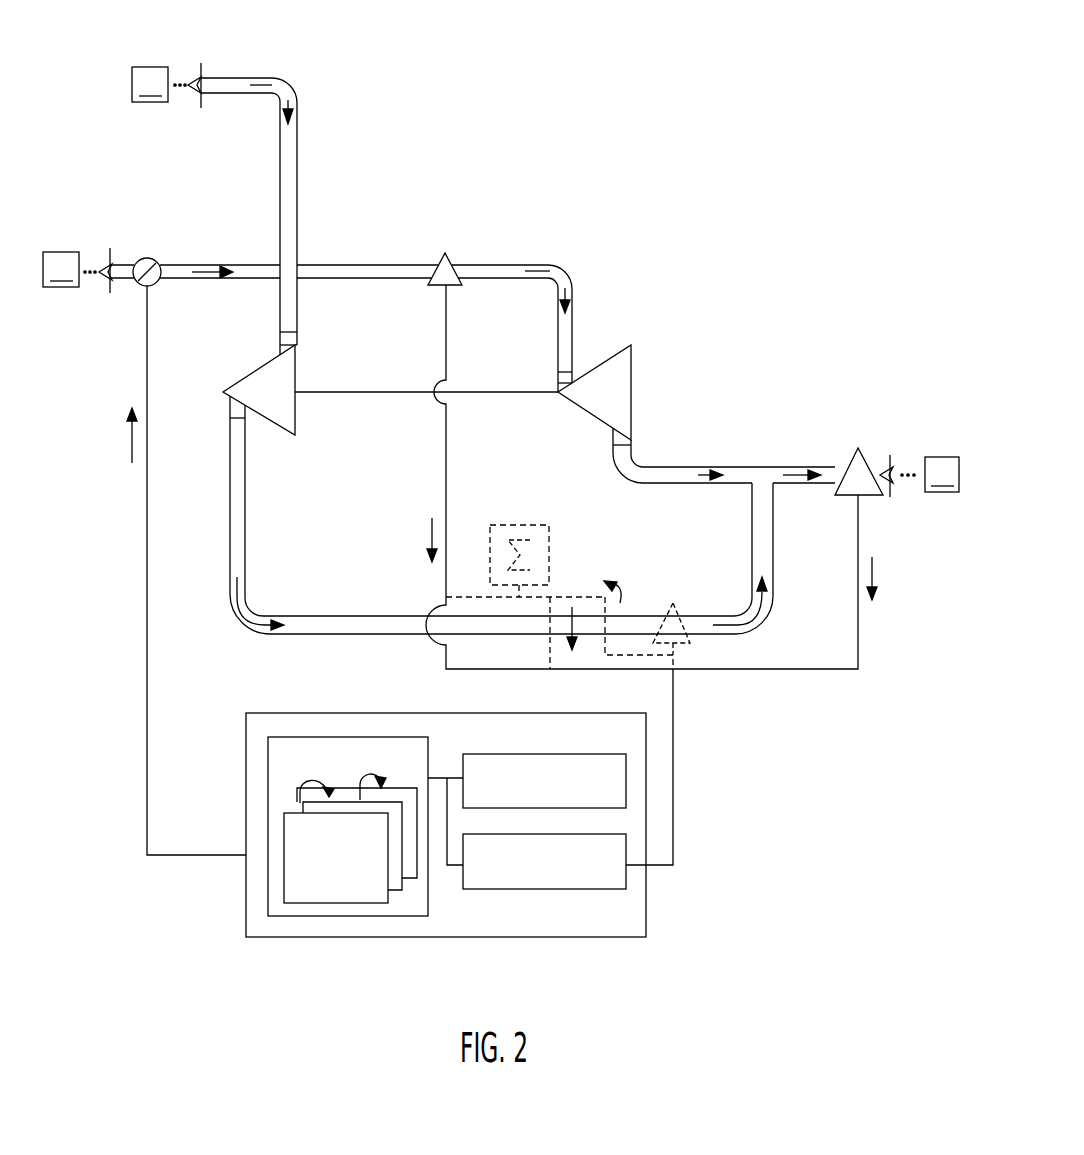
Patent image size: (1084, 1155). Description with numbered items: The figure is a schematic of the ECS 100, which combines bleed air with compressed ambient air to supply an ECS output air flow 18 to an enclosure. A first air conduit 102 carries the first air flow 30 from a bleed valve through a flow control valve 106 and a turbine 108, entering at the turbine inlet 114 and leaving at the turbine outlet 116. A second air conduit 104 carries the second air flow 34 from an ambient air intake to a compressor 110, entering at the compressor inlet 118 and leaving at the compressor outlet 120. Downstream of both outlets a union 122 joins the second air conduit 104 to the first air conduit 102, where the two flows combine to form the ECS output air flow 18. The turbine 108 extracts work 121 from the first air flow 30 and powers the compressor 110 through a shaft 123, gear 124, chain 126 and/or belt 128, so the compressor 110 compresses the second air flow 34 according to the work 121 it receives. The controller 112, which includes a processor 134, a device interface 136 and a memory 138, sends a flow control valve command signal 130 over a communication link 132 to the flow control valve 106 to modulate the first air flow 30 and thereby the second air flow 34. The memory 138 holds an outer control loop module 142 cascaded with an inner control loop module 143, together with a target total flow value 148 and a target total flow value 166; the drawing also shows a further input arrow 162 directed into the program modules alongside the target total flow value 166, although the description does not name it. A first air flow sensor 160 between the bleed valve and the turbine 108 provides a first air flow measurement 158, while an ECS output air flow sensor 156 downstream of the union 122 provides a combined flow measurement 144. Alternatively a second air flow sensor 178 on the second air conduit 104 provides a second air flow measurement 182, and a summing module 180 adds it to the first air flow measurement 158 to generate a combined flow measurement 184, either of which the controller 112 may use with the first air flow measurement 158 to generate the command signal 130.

The ECS output air flow 18 is at (795, 467).
The first air flow 30 is at (568, 292).
The second air flow 34 is at (292, 92).
The ECS 100 is at (122, 827).
The first air conduit 102 is at (361, 262).
The second air conduit 104 is at (297, 183).
The flow control valve 106 is at (145, 258).
The turbine 108 is at (632, 390).
The compressor 110 is at (300, 410).
The controller 112 is at (646, 912).
The turbine inlet 114 is at (558, 383).
The turbine outlet 116 is at (632, 452).
The compressor inlet 118 is at (298, 345).
The compressor outlet 120 is at (230, 408).
The work 121 is at (422, 367).
The union 122 is at (742, 495).
The shaft 123 is at (559, 577).
The gear 124 is at (559, 577).
The chain 126 is at (559, 577).
The belt 128 is at (559, 577).
The flow control valve command signal 130 is at (130, 433).
The communication link 132 is at (796, 670).
The processor 134 is at (483, 754).
The device interface 136 is at (500, 889).
The memory 138 is at (268, 833).
The outer control loop module 142 is at (404, 884).
The inner control loop module 143 is at (418, 850).
The combined flow measurement 144 is at (874, 575).
The target total flow value 148 is at (312, 903).
The ECS output air flow sensor 156 is at (868, 465).
The first air flow measurement 158 is at (431, 531).
The first air flow sensor 160 is at (455, 264).
The data signal 162 is at (360, 790).
The target total flow value 166 is at (300, 790).
The second air flow sensor 178 is at (692, 641).
The summing module 180 is at (550, 556).
The second air flow measurement 182 is at (620, 590).
The combined flow measurement 184 is at (574, 624).